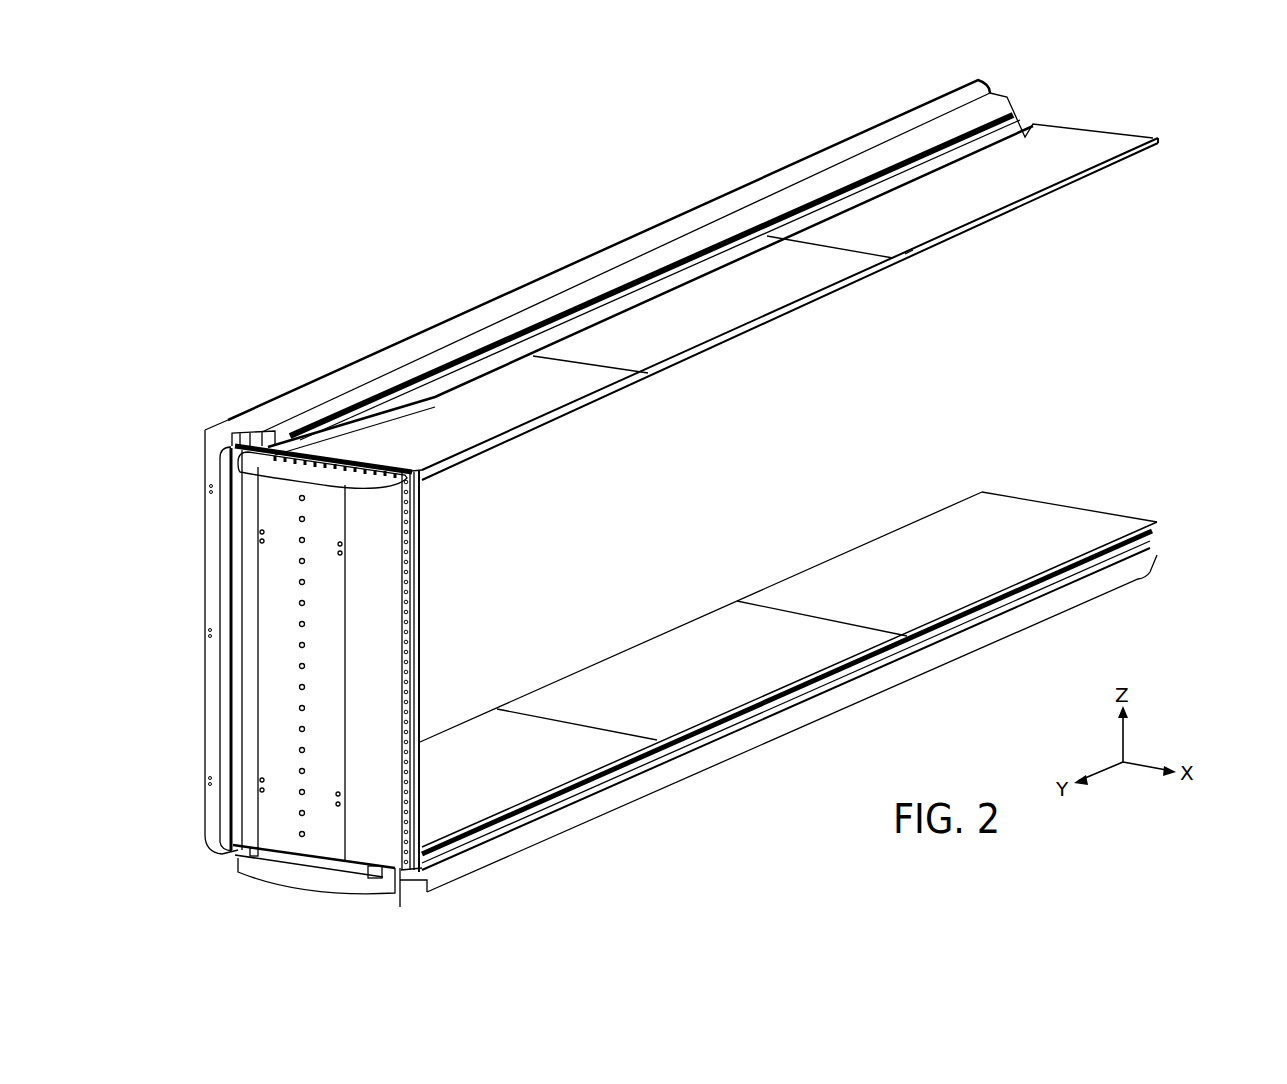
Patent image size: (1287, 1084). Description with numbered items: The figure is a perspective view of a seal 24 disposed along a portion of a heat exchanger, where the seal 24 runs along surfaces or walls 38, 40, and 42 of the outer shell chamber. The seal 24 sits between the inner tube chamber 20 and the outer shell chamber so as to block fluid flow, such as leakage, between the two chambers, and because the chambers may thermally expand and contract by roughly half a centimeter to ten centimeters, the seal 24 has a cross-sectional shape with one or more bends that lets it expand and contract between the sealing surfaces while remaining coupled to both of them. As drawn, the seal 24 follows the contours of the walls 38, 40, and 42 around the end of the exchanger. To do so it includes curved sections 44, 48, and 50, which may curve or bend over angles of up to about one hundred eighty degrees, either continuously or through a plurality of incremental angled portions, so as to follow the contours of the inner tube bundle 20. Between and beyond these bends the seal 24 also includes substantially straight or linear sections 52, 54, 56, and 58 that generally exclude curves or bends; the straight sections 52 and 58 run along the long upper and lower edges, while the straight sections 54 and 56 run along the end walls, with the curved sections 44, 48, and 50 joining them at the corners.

The inner tube chamber 20 is at (1197, 196).
The seal 24 is at (1012, 105).
The wall 38 is at (327, 388).
The wall 40 is at (265, 870).
The wall 42 is at (527, 827).
The curved section 44 is at (258, 438).
The curved section 48 is at (226, 858).
The curved section 50 is at (412, 887).
The straight section 52 is at (562, 307).
The straight section 54 is at (182, 427).
The straight section 56 is at (307, 860).
The straight section 58 is at (710, 733).